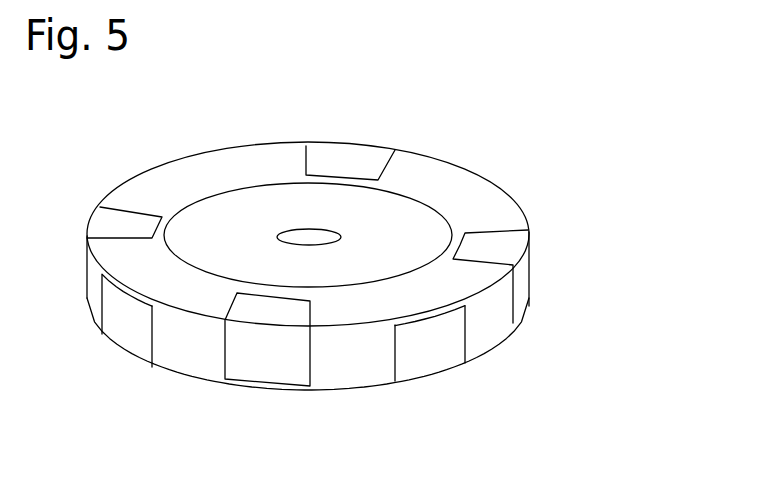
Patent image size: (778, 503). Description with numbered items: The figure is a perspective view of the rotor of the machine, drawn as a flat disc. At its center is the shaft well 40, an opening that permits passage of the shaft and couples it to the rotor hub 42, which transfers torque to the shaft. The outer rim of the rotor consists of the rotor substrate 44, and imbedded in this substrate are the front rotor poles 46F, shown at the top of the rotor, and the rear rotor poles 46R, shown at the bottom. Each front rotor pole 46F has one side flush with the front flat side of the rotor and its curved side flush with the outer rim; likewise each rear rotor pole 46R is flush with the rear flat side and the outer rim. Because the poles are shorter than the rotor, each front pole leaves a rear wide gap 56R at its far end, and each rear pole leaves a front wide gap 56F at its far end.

The shaft well 40 is at (312, 237).
The rotor hub 42 is at (372, 245).
The rotor substrate 44 is at (490, 218).
The front rotor poles 46F is at (263, 348).
The rear rotor poles 46R is at (427, 348).
The front wide gap 56F is at (442, 311).
The rear wide gap 56R is at (267, 387).